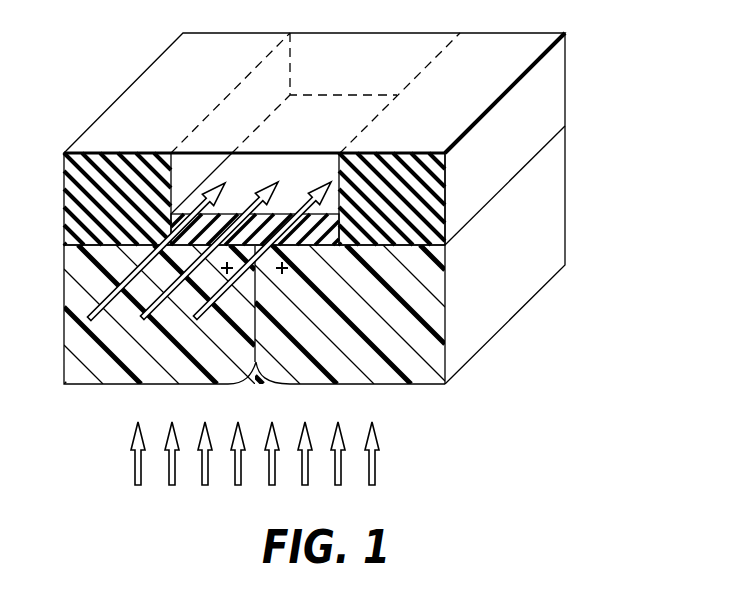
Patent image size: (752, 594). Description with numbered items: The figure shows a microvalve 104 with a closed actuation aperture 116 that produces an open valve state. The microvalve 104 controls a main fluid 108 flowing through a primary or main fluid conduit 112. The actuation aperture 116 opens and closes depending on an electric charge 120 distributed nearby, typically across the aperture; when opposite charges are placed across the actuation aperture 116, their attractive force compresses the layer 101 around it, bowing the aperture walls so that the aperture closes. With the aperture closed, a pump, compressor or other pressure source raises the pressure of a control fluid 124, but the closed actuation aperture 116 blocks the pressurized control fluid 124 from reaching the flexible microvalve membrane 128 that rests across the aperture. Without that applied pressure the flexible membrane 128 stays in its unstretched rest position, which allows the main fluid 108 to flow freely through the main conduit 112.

The layer 101 is at (425, 340).
The microvalve 104 is at (590, 52).
The fluid 108 is at (97, 288).
The main fluid conduit 112 is at (380, 56).
The actuation aperture 116 is at (261, 380).
The electric charge 120 is at (288, 268).
The control fluid 124 is at (137, 466).
The flexible microvalve membrane 128 is at (222, 217).